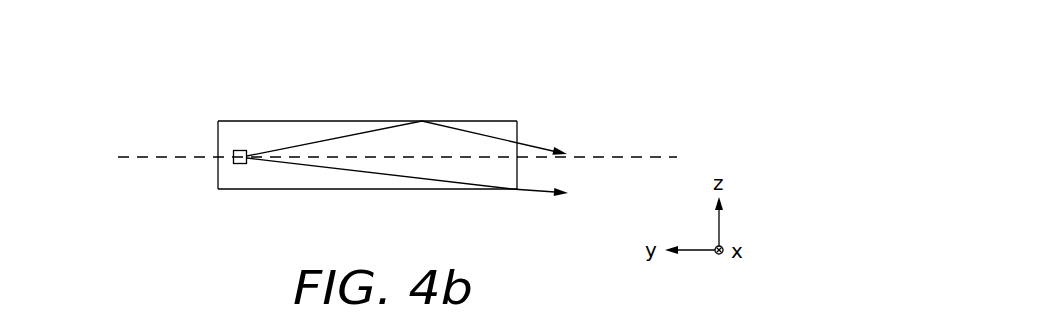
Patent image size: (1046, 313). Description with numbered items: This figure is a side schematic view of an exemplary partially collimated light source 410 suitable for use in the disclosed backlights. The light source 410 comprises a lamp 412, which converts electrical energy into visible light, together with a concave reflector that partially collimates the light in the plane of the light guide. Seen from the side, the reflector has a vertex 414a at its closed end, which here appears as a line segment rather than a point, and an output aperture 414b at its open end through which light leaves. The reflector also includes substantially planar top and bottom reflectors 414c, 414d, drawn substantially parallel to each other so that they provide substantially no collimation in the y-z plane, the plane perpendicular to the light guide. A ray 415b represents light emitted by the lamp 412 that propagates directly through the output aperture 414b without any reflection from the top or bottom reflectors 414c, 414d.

The partially collimated light source 410 is at (185, 43).
The lamp 412 is at (240, 150).
The vertex 414a is at (218, 154).
The output aperture 414b is at (519, 124).
The top reflector 414c is at (331, 121).
The bottom reflector 414d is at (240, 190).
The ray 415b is at (530, 191).